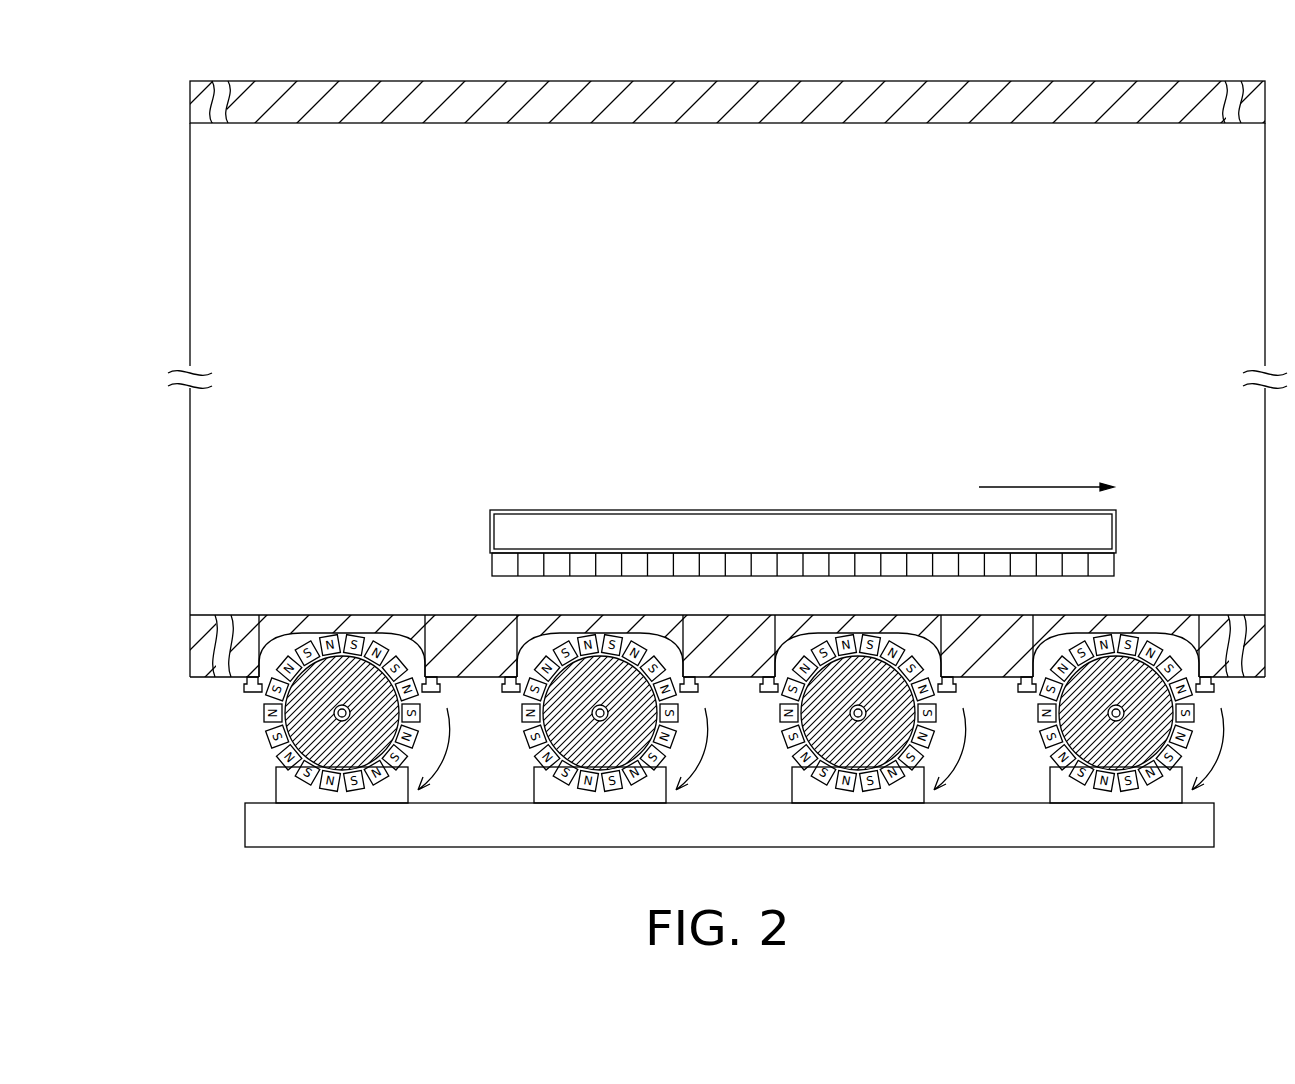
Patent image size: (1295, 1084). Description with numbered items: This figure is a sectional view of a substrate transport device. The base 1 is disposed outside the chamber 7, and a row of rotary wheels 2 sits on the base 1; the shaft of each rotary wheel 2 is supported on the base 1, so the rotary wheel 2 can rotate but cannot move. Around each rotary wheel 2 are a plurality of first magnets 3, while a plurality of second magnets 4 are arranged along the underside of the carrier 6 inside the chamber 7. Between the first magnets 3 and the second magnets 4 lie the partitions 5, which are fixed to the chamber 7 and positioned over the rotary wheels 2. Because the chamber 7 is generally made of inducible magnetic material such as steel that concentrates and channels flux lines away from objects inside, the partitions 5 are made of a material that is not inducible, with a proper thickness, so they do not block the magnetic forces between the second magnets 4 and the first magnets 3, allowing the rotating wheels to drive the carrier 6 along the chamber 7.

The base 1 is at (260, 820).
The rotary wheel 2 is at (300, 740).
The first magnets 3 is at (265, 707).
The second magnets 4 is at (493, 565).
The partition 5 is at (268, 640).
The carrier 6 is at (776, 532).
The chamber 7 is at (236, 191).